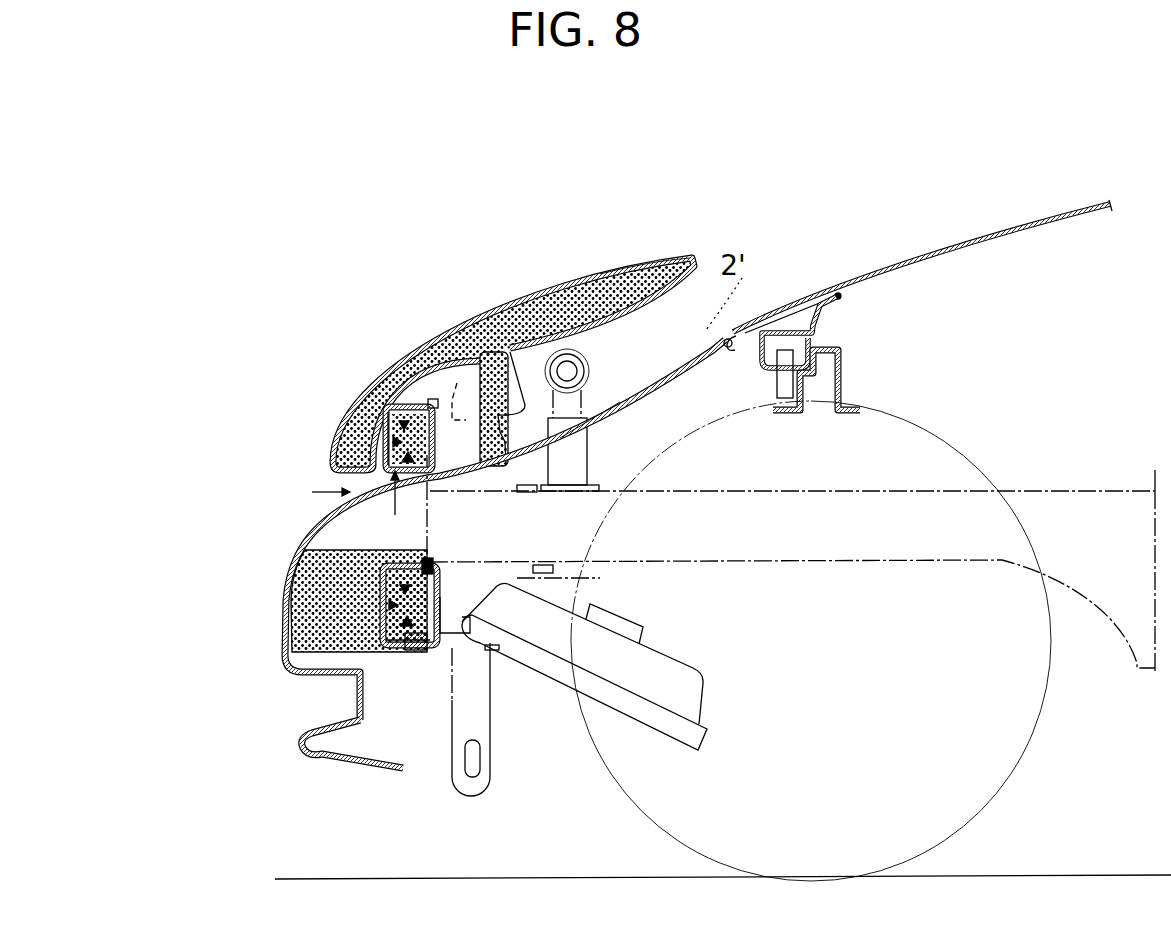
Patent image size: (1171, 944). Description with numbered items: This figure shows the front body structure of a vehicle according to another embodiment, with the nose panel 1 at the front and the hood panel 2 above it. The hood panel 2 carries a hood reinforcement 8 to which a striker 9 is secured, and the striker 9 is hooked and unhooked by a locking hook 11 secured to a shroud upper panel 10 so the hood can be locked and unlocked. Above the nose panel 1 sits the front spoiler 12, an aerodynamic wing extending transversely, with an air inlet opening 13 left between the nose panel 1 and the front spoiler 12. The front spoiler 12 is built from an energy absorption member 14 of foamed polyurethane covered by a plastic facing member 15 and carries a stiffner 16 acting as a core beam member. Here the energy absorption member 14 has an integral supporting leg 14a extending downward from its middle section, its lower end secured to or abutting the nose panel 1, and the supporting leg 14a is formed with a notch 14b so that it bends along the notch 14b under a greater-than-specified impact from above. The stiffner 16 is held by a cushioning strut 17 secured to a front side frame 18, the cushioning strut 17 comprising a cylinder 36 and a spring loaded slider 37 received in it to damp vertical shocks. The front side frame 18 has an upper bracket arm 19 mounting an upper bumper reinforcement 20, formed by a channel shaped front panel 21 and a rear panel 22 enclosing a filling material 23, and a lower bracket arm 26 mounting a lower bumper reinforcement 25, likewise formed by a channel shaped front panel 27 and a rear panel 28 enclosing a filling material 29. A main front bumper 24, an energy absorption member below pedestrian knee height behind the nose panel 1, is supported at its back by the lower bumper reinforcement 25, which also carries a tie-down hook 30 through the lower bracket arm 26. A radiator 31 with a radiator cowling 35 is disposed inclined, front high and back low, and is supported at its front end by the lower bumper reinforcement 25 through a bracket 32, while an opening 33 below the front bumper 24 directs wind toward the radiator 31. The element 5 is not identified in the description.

The nose panel 1 is at (299, 547).
The hood panel 2 is at (973, 239).
The tire 5 is at (1012, 770).
The hood reinforcement 8 is at (841, 297).
The striker 9 is at (809, 347).
The shroud upper panel 10 is at (847, 383).
The locking hook 11 is at (778, 376).
The front spoiler 12 is at (494, 313).
The air inlet opening 13 is at (311, 488).
The energy absorption member 14 is at (567, 315).
The supporting leg 14a is at (521, 462).
The notch 14b is at (520, 345).
The plastic facing member 15 is at (621, 270).
The stiffner 16 is at (574, 353).
The cushioning strut 17 is at (588, 438).
The front side frame 18 is at (866, 564).
The upper bracket arm 19 is at (457, 383).
The upper bumper reinforcement 20 is at (398, 509).
The channel shaped front panel 21 is at (377, 440).
The rear panel 22 is at (434, 441).
The filling material 23 is at (417, 427).
The main front bumper 24 is at (298, 608).
The lower bumper reinforcement 25 is at (410, 636).
The lower bracket arm 26 is at (566, 579).
The channel shaped front panel 27 is at (384, 603).
The rear panel 28 is at (432, 570).
The filling material 29 is at (389, 634).
The tie-down hook 30 is at (452, 718).
The radiator 31 is at (695, 737).
The bracket 32 is at (447, 612).
The opening 33 is at (360, 708).
The radiator cowling 35 is at (680, 668).
The cylinder 36 is at (588, 463).
The spring loaded slider 37 is at (587, 397).